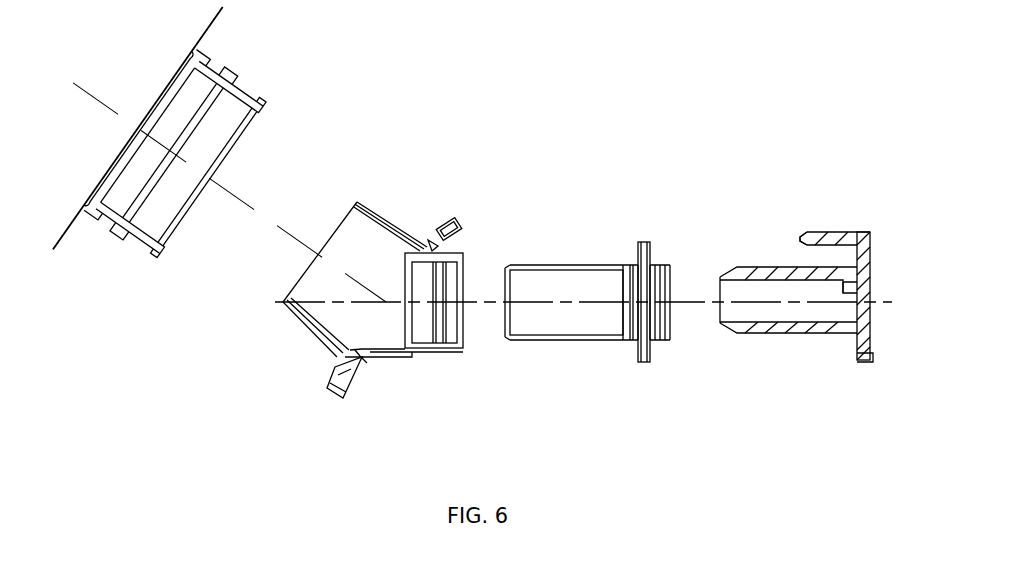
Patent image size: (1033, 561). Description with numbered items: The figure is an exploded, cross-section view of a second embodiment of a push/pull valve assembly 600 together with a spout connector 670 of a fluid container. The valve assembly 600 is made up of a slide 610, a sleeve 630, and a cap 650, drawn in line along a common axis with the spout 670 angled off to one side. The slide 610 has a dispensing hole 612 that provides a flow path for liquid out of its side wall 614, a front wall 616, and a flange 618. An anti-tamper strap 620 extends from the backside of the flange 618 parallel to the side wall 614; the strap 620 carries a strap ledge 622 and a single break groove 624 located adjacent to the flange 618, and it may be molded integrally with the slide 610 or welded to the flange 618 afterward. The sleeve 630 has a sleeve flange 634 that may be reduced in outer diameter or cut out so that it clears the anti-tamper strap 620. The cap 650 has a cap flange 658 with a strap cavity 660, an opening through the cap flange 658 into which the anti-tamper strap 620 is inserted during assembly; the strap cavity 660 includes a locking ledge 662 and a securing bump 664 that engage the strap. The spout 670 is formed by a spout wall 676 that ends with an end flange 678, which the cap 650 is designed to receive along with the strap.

The push/pull valve assembly 600 is at (621, 144).
The slide 610 is at (831, 290).
The dispensing hole 612 is at (797, 330).
The side wall 614 is at (753, 330).
The front wall 616 is at (872, 308).
The flange 618 is at (867, 360).
The anti-tamper strap 620 is at (828, 232).
The strap ledge 622 is at (807, 233).
The break groove 624 is at (860, 232).
The sleeve 630 is at (607, 313).
The sleeve flange 634 is at (648, 242).
The cap 650 is at (386, 305).
The cap flange 658 is at (328, 398).
The strap cavity 660 is at (448, 244).
The locking ledge 662 is at (443, 222).
The securing bump 664 is at (428, 243).
The spout connector 670 is at (235, 211).
The spout wall 676 is at (147, 240).
The end flange 678 is at (262, 110).